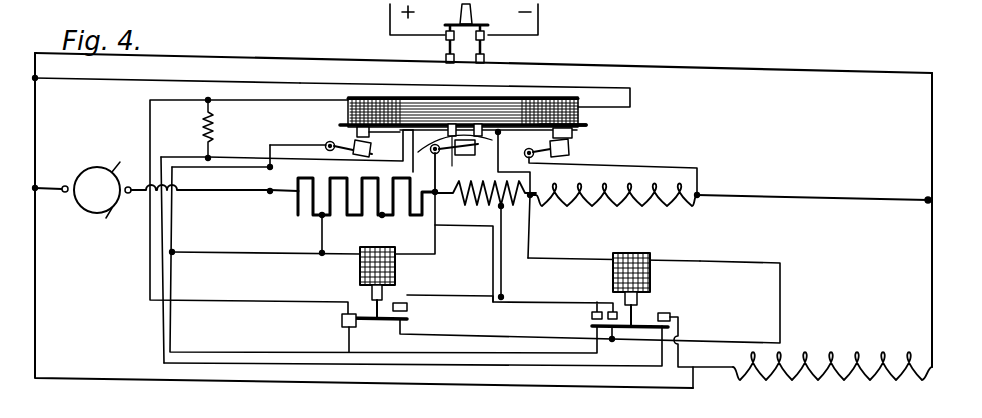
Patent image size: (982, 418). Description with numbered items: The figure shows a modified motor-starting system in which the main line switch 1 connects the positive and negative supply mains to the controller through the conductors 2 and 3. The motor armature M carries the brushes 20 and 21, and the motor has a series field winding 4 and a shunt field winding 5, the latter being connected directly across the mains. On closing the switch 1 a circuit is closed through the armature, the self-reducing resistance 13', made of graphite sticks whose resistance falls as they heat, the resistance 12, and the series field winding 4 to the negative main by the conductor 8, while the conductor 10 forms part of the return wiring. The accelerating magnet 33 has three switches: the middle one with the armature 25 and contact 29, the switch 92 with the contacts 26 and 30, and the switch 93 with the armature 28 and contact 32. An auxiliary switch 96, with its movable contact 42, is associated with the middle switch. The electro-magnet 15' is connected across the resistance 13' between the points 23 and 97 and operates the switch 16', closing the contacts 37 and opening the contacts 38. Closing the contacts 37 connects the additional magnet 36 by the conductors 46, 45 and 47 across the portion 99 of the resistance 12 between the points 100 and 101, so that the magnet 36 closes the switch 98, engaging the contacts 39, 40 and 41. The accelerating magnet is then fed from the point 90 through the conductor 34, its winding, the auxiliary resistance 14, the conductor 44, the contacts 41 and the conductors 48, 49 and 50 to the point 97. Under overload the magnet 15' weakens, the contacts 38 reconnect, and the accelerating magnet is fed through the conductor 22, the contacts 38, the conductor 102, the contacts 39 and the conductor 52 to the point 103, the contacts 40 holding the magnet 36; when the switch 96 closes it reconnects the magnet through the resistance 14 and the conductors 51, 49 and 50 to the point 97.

The main line two-pole switch 1 is at (483, 51).
The conductor 2 is at (345, 59).
The conductor 3 is at (576, 64).
The series field winding 4 is at (628, 172).
The shunt field winding 5 is at (835, 353).
The conductor 8 is at (778, 197).
The conductor 10 is at (932, 270).
The resistance 12 is at (483, 184).
The self-reducing resistance 13' is at (366, 213).
The auxiliary resistance 14 is at (214, 135).
The electro-magnet 15' is at (397, 273).
The switch 16' is at (345, 295).
The brush 20 is at (119, 212).
The brush 21 is at (70, 182).
The conductor 22 is at (150, 124).
The point 23 is at (435, 205).
The armature 25 is at (458, 158).
The contact 26 is at (372, 154).
The armature 28 is at (569, 148).
The contact 29 is at (498, 145).
The contact 30 is at (357, 131).
The contact 32 is at (572, 126).
The accelerating magnet 33 is at (478, 96).
The conductor 34 is at (317, 86).
The additional magnet 36 is at (651, 276).
The contacts 37 is at (408, 309).
The contacts 38 is at (340, 320).
The contacts 39 is at (590, 317).
The contacts 40 is at (618, 313).
The contacts 41 is at (672, 318).
The movable contact 42 is at (452, 160).
The conductor 44 is at (260, 168).
The conductor 45 is at (745, 262).
The conductor 46 is at (501, 287).
The conductor 47 is at (570, 262).
The conductor 48 is at (172, 280).
The conductor 49 is at (261, 252).
The conductor 50 is at (320, 240).
The conductor 51 is at (172, 222).
The conductor 52 is at (493, 248).
The point 90 is at (40, 78).
The switch 92 is at (370, 138).
The switch 93 is at (562, 138).
The auxiliary switch 96 is at (432, 155).
The point 97 is at (305, 213).
The switch 98 is at (660, 310).
The portion 99 is at (510, 213).
The point 100 is at (499, 208).
The point 101 is at (530, 205).
The conductor 102 is at (362, 326).
The point 103 is at (382, 218).